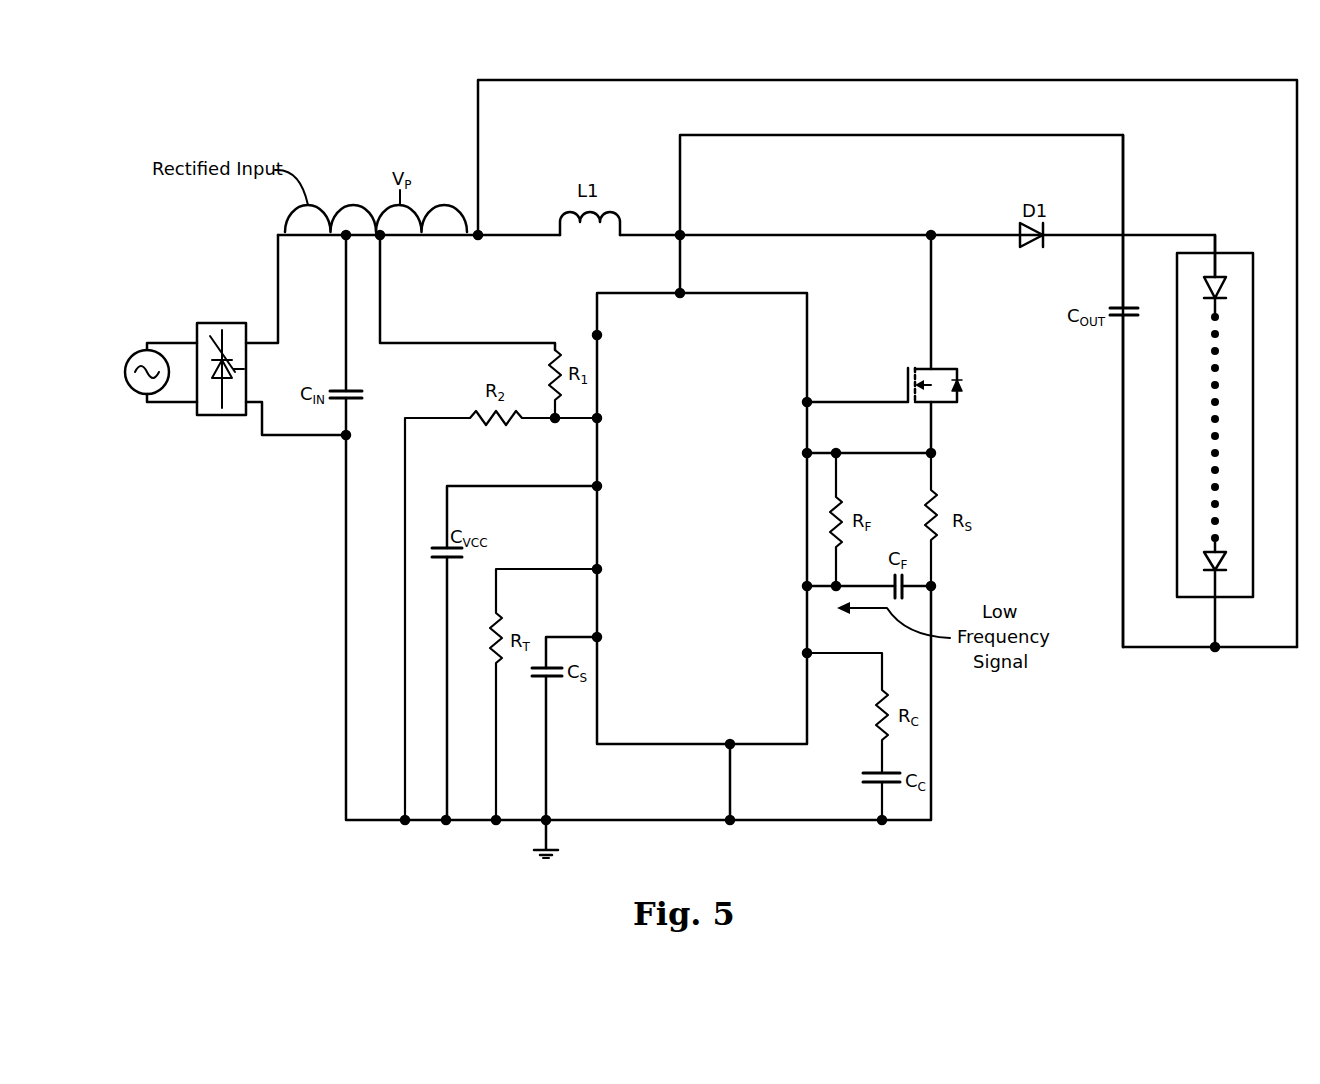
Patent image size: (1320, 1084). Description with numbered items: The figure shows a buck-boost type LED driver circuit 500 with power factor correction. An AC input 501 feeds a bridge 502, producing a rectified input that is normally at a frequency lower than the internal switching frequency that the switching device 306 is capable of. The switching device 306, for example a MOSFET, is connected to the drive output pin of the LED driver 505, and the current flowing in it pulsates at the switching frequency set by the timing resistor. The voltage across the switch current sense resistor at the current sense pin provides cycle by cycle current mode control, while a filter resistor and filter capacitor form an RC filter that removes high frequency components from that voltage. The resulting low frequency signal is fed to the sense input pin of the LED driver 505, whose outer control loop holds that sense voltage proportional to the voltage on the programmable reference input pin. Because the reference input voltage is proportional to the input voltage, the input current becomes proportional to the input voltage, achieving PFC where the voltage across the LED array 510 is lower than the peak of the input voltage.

The buck-boost LED driver circuit 500 is at (437, 113).
The AC input 501 is at (132, 357).
The bridge 502 is at (197, 323).
The LED driver 505 is at (738, 293).
The switching device 306 is at (945, 368).
The LED array 510 is at (1232, 382).